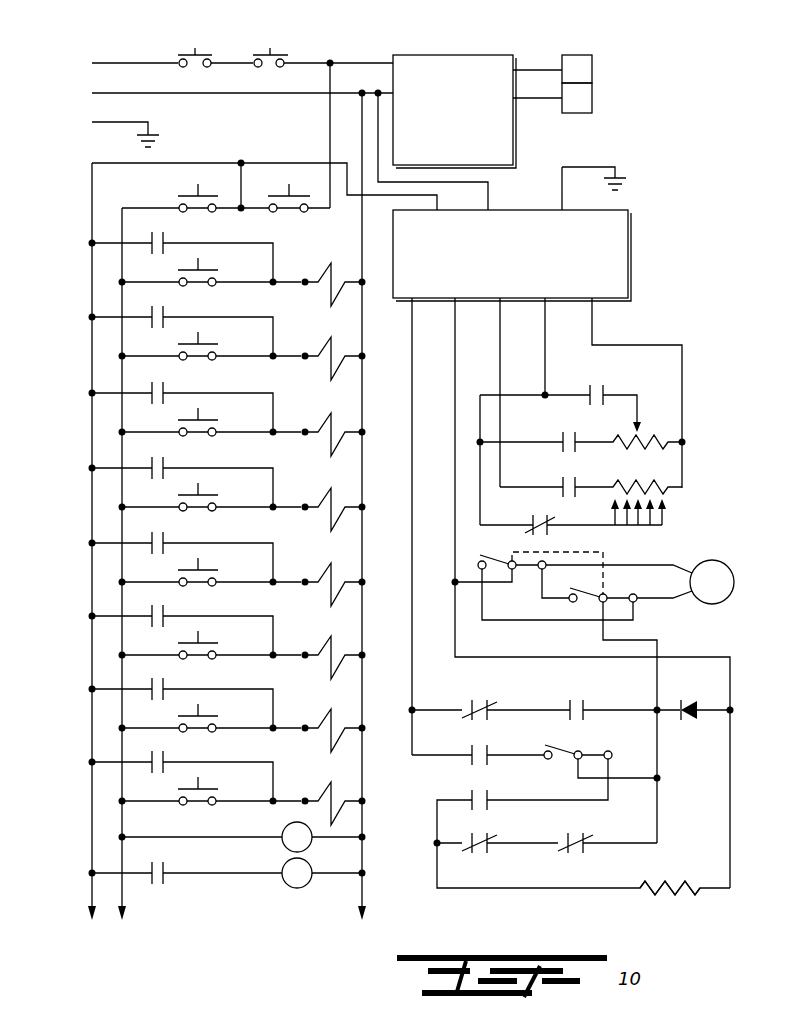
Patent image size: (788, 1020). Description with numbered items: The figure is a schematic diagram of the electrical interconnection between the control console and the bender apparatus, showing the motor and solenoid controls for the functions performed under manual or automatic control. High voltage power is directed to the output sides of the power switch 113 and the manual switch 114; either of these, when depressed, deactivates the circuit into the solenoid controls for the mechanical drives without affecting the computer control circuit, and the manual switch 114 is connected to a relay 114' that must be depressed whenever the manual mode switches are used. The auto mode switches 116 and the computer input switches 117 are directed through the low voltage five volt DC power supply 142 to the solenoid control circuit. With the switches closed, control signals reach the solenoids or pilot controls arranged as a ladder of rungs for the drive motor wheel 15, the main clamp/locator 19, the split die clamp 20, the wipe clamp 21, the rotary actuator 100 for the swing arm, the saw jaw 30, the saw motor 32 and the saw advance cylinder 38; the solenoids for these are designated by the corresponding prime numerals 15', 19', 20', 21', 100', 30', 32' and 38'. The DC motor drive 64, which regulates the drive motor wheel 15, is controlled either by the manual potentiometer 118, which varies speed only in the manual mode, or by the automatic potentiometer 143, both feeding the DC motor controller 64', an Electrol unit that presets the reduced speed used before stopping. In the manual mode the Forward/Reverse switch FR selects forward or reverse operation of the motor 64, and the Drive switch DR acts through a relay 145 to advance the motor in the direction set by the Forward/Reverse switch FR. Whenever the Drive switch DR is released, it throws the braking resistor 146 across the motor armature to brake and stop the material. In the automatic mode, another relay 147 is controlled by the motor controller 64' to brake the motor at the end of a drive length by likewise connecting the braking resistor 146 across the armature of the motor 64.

The power switch 113 is at (207, 187).
The manual switch 114 is at (285, 169).
The drive motor wheel 15 is at (202, 254).
The drive motor wheel solenoid 15' is at (348, 274).
The split die clamp 20 is at (201, 328).
The split die clamp solenoid 20' is at (348, 353).
The main clamp/locator 19 is at (202, 402).
The main clamp/locator solenoid 19' is at (348, 425).
The wipe clamp 21 is at (202, 478).
The wipe clamp solenoid 21' is at (349, 502).
The rotary actuator 100 is at (207, 551).
The rotary actuator solenoid 100' is at (355, 576).
The saw jaw 30 is at (201, 626).
The saw jaw solenoid 30' is at (349, 650).
The saw motor 32 is at (202, 699).
The saw motor solenoid 32' is at (349, 723).
The saw advance cylinder 38 is at (202, 773).
The saw advance cylinder solenoid 38' is at (349, 797).
The 5 VDC power supply 142 is at (517, 145).
The auto mode switches 116 is at (592, 68).
The computer input switches 117 is at (592, 100).
The DC motor controller 64' is at (541, 255).
The manual potentiometer 118 is at (682, 442).
The automatic potentiometer 143 is at (660, 490).
The Forward/Reverse switch FR is at (612, 556).
The DC motor drive 64 is at (735, 582).
The relay 147 is at (484, 700).
The Drive switch DR is at (587, 744).
The relay 145 is at (484, 833).
The relay 114' is at (607, 832).
The braking resistor 146 is at (665, 882).